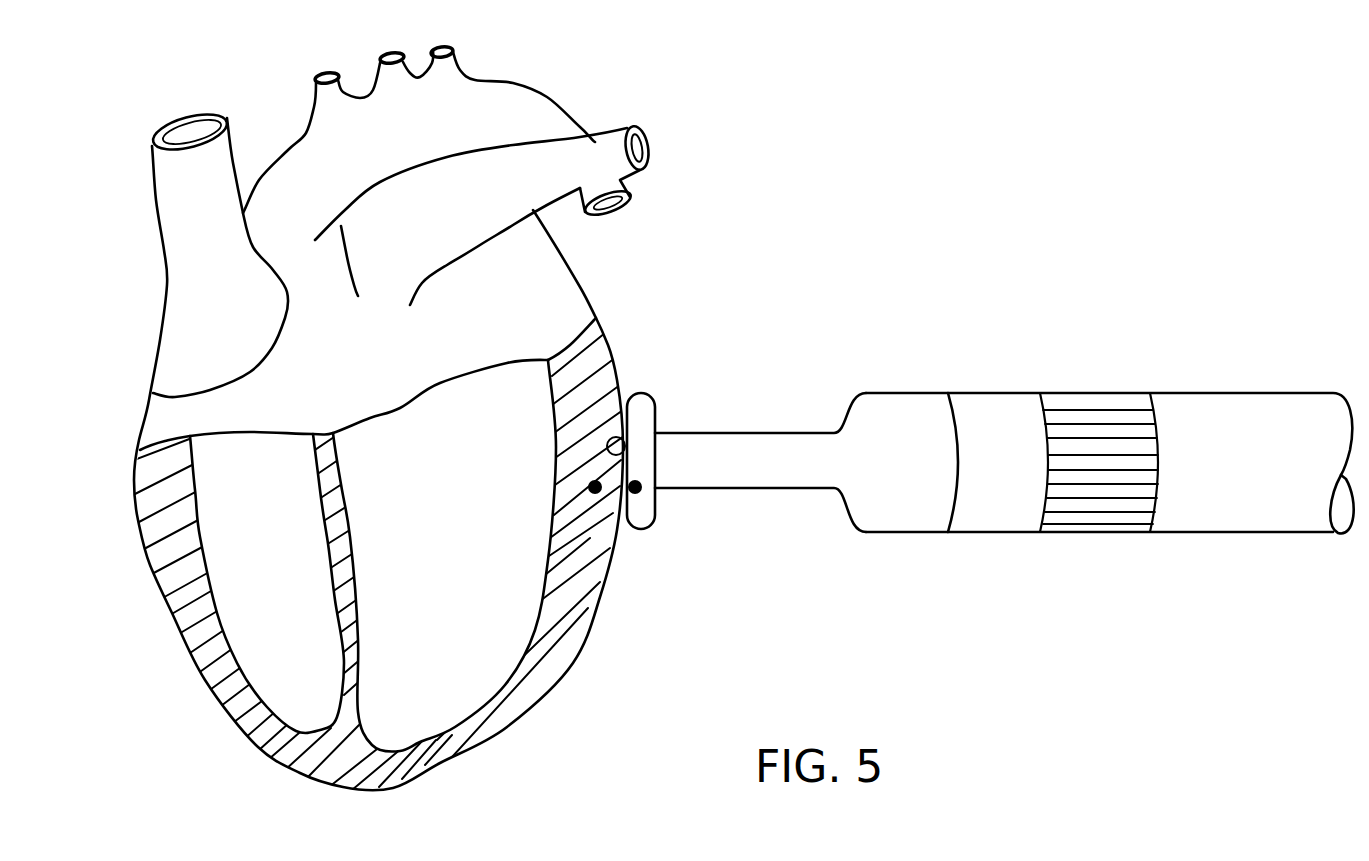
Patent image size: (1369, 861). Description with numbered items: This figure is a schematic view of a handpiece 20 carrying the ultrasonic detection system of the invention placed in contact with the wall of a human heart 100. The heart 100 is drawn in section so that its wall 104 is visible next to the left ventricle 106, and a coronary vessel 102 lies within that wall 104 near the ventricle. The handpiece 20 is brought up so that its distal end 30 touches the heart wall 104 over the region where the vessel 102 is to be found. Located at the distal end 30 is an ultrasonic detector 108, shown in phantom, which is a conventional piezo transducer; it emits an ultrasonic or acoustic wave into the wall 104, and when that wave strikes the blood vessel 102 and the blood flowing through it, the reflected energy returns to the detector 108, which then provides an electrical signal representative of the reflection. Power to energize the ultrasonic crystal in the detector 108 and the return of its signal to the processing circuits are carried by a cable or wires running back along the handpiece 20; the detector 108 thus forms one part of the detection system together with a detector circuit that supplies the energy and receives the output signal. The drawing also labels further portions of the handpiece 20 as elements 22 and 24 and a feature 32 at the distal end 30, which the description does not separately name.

The handpiece 20 is at (952, 260).
The knurled connector collar 22 is at (1082, 393).
The lead body 24 is at (763, 490).
The distal end 30 is at (638, 390).
The electrode 32 is at (626, 438).
The human heart 100 is at (147, 403).
The coronary vessel 102 is at (590, 486).
The wall 104 is at (597, 593).
The left ventricle 106 is at (517, 620).
The ultrasonic detector 108 is at (640, 490).